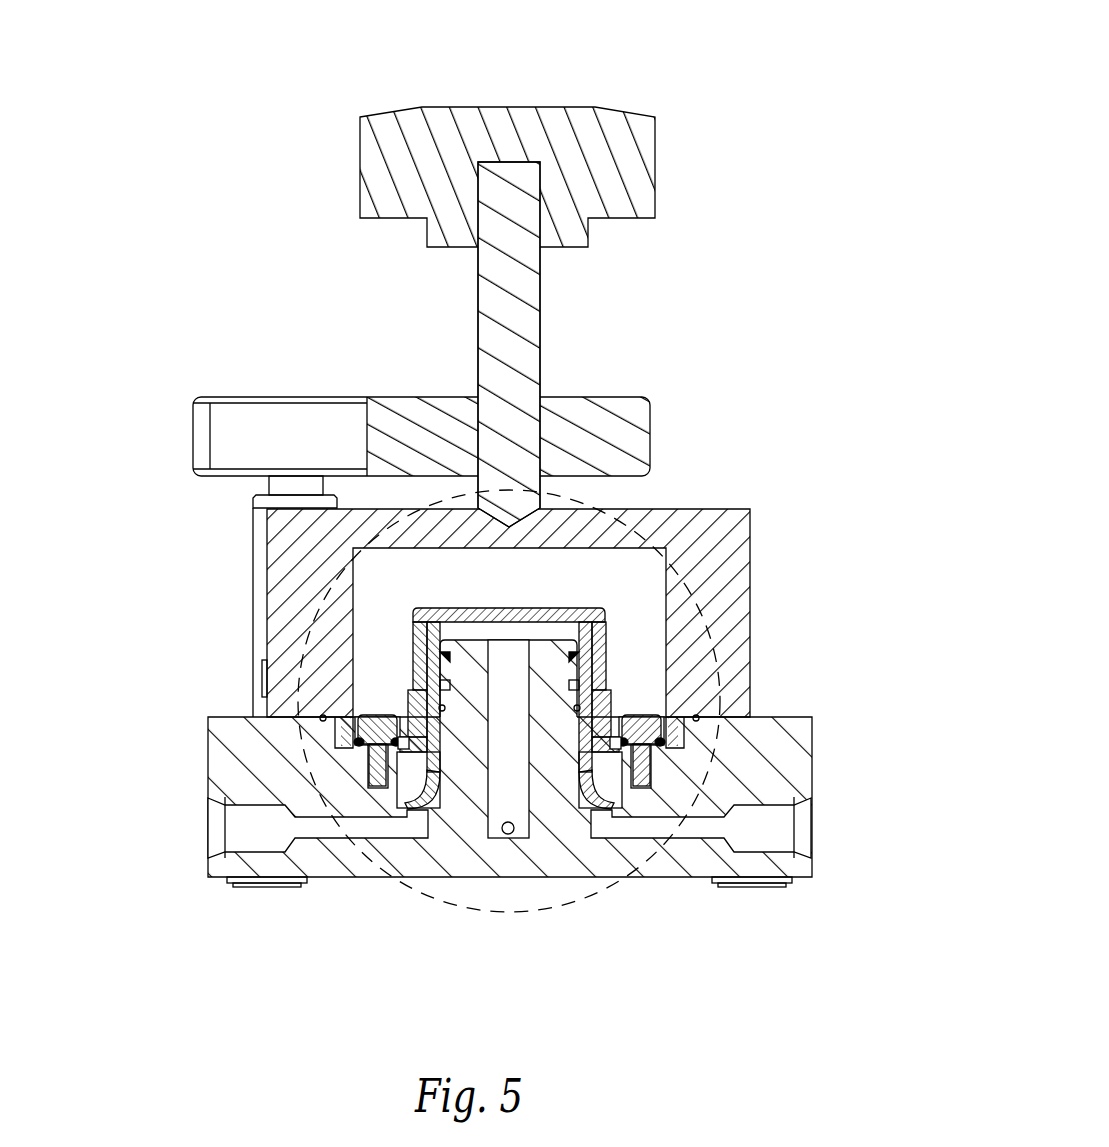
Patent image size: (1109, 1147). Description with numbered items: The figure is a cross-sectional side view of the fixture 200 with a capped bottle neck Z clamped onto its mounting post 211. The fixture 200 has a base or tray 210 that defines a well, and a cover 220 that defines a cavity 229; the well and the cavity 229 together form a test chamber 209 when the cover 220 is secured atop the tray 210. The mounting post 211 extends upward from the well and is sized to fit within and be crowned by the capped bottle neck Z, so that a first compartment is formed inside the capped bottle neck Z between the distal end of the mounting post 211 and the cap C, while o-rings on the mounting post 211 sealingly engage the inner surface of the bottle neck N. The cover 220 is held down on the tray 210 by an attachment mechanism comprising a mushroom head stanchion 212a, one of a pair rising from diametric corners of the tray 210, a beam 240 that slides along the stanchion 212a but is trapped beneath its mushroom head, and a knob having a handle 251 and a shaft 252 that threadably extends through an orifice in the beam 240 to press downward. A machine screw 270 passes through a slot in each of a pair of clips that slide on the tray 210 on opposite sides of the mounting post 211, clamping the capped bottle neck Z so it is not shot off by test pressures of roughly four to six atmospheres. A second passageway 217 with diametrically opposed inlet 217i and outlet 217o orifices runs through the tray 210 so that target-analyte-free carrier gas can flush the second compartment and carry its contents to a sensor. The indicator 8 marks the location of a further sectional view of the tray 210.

The fixture 200 is at (690, 74).
The handle 251 is at (375, 160).
The shaft 252 is at (527, 303).
The beam 240 is at (604, 408).
The cover 220 is at (705, 512).
The mushroom head stanchion 212a is at (257, 542).
The test chamber 209 is at (628, 603).
The cavity 229 is at (623, 645).
The tray 210 is at (788, 757).
The machine screw 270 is at (373, 762).
The mounting post 211 is at (467, 777).
The second passageway 217 is at (506, 898).
The outlet orifice 217o is at (195, 828).
The inlet orifice 217i is at (824, 828).
The section reference 8 is at (392, 884).
The capped bottle neck Z is at (421, 606).
The cap C is at (553, 608).
The bottle neck N is at (592, 691).